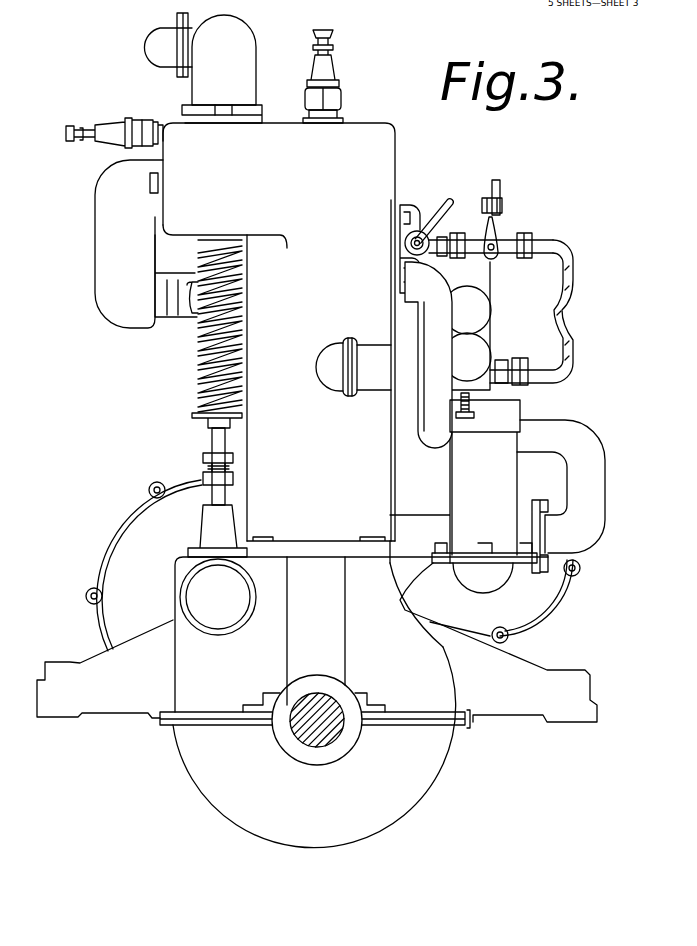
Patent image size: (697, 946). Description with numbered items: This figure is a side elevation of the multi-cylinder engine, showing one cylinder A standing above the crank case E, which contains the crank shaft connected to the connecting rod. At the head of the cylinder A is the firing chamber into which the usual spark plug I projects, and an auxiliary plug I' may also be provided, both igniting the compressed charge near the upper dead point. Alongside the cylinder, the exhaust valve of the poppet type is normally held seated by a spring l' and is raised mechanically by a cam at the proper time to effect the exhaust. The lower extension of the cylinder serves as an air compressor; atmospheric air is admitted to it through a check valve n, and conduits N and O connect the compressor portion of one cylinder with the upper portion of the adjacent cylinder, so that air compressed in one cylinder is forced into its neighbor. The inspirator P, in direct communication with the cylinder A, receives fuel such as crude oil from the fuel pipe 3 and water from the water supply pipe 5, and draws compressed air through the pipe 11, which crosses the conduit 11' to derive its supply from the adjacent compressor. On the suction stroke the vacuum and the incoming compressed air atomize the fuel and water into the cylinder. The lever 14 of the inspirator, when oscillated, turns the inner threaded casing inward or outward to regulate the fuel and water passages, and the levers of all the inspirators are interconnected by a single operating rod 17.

The cylinder A is at (378, 148).
The spark plug I is at (114, 114).
The auxiliary plug I' is at (341, 76).
The spring l' is at (196, 398).
The crank case E is at (440, 780).
The inspirator P is at (413, 252).
The water supply pipe 5 is at (418, 228).
The fuel pipe 3 is at (451, 199).
The conduit O is at (470, 300).
The conduit N is at (473, 362).
The conduit 11' is at (532, 234).
The pipe 11 is at (559, 312).
The operating rod 17 is at (499, 188).
The lever 14 is at (498, 222).
The check valve n is at (478, 394).